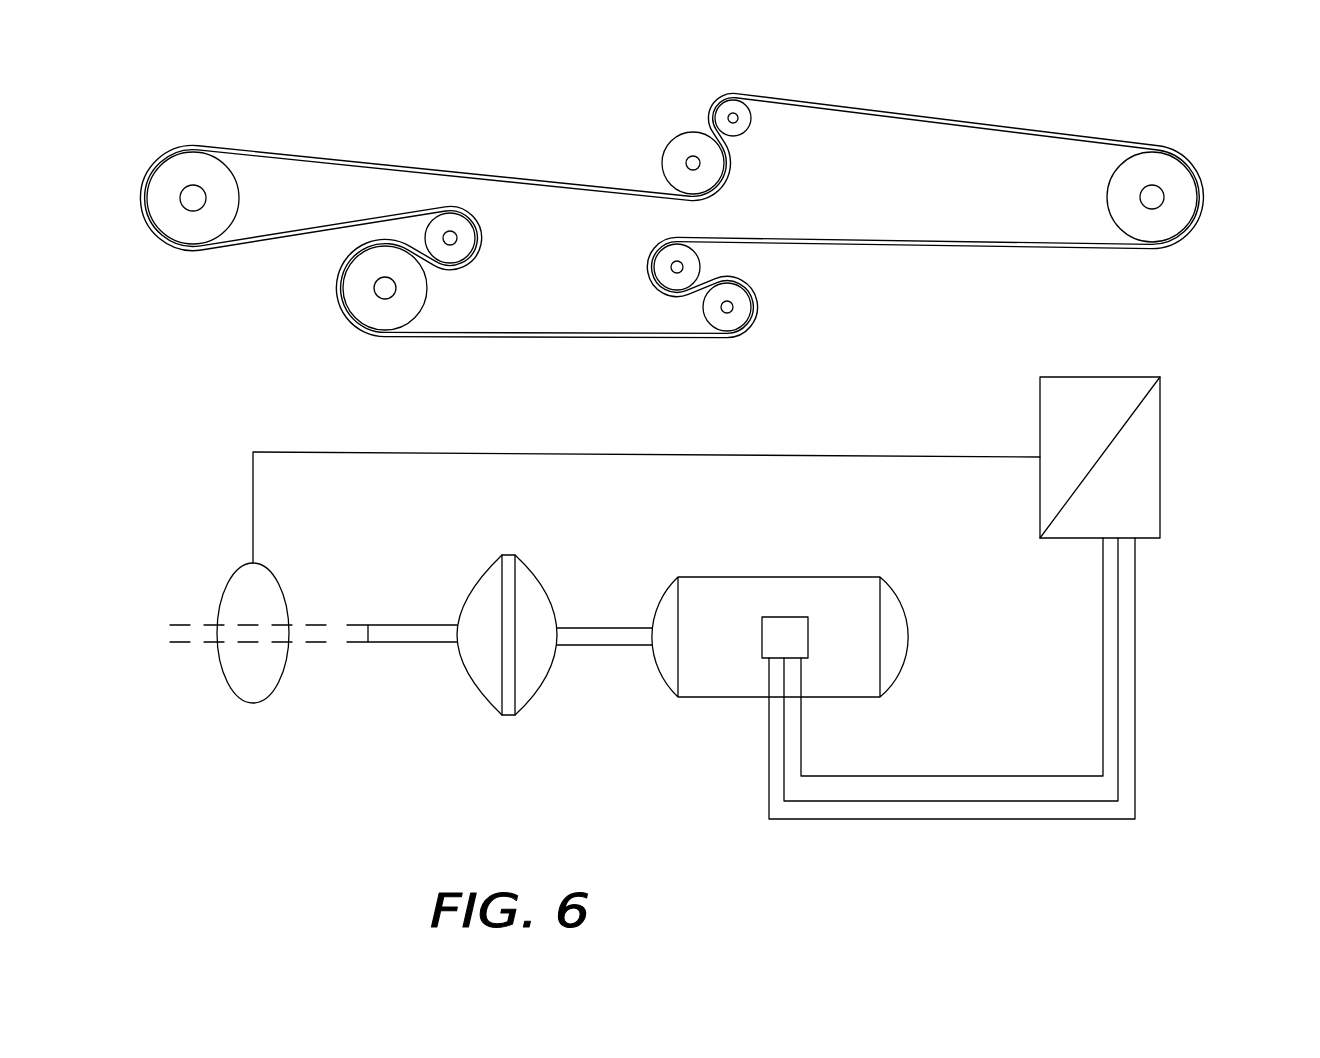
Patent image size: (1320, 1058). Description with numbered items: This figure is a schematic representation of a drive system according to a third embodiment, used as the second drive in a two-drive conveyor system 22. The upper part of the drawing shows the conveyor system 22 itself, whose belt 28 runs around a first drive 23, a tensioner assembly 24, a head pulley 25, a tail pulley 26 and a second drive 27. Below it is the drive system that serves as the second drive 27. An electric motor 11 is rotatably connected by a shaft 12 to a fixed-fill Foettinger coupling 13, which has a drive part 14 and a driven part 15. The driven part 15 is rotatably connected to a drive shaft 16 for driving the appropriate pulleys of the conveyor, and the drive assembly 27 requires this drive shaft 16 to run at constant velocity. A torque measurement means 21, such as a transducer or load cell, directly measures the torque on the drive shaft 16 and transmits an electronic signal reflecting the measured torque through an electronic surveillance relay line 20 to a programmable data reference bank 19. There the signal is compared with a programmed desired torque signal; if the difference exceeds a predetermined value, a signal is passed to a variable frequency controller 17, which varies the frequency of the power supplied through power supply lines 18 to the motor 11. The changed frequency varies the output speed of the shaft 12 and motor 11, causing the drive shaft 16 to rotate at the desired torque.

The electric motor 11 is at (850, 577).
The shaft 12 is at (595, 631).
The fixed-fill Foettinger coupling 13 is at (510, 555).
The drive part 14 is at (532, 693).
The driven part 15 is at (487, 687).
The drive shaft 16 is at (395, 628).
The variable frequency controller 17 is at (1147, 458).
The power supply lines 18 is at (922, 817).
The programmable data reference bank 19 is at (1093, 392).
The electronic surveillance relay line 20 is at (823, 456).
The torque measurement means 21 is at (277, 575).
The conveyor system 22 is at (667, 200).
The first drive 23 is at (365, 297).
The tensioner assembly 24 is at (735, 312).
The head pulley 25 is at (168, 208).
The tail pulley 26 is at (1168, 220).
The second drive 27 is at (682, 148).
The belt 28 is at (443, 170).